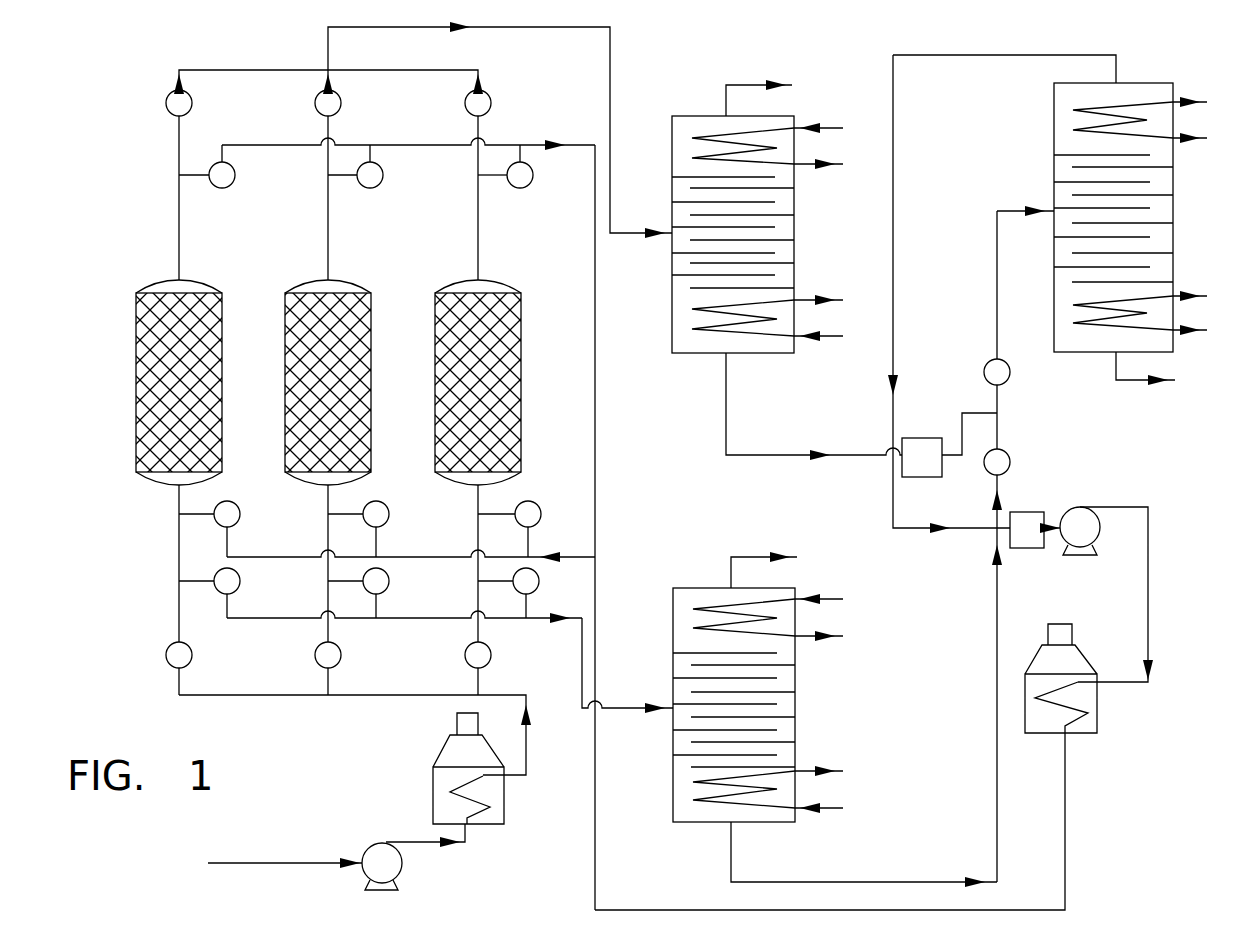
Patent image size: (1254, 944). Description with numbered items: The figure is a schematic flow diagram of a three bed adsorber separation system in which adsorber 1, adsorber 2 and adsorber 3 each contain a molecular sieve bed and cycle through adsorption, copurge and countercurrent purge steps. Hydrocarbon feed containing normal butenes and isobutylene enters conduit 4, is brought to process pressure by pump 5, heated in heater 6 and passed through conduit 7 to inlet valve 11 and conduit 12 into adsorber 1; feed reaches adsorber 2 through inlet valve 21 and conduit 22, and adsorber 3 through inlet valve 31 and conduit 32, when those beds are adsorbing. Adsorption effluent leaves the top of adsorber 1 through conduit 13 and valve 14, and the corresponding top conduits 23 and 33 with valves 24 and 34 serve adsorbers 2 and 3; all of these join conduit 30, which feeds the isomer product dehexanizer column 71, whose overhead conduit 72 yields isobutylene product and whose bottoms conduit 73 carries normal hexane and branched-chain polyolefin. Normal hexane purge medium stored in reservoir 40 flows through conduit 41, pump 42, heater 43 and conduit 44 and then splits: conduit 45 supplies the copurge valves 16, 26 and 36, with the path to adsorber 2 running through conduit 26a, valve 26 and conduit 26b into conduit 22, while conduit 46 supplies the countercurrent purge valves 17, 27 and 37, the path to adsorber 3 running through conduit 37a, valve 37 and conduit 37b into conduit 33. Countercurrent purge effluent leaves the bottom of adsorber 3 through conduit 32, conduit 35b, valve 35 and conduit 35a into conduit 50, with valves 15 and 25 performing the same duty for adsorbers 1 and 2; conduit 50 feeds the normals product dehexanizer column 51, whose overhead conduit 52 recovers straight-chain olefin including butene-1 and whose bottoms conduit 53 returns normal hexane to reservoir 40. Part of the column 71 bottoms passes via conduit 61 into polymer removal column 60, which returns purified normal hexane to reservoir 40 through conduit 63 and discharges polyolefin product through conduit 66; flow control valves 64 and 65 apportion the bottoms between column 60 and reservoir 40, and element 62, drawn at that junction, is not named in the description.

The adsorber 1 is at (136, 347).
The adsorber 2 is at (285, 347).
The adsorber 3 is at (435, 347).
The conduit 4 is at (268, 849).
The pump 5 is at (400, 883).
The heater 6 is at (506, 808).
The conduit 7 is at (528, 744).
The inlet valve 11 is at (167, 656).
The conduit 12 is at (177, 505).
The conduit 13 is at (177, 210).
The valve 14 is at (192, 104).
The valve 15 is at (240, 585).
The valve 16 is at (227, 501).
The valve 17 is at (232, 185).
The inlet valve 21 is at (350, 662).
The conduit 22 is at (326, 505).
The conduit 23 is at (332, 218).
The valve 24 is at (341, 104).
The valve 25 is at (390, 581).
The valve 26 is at (390, 514).
The conduit 26a is at (380, 543).
The conduit 26b is at (362, 512).
The valve 27 is at (383, 176).
The conduit 30 is at (527, 36).
The inlet valve 31 is at (488, 664).
The conduit 32 is at (475, 490).
The conduit 33 is at (482, 218).
The valve 34 is at (491, 104).
The valve 35 is at (531, 593).
The conduit 35a is at (529, 620).
The conduit 35b is at (493, 583).
The valve 36 is at (535, 501).
The valve 37 is at (529, 185).
The conduit 37a is at (522, 152).
The conduit 37b is at (493, 178).
The purge medium reservoir 40 is at (1030, 510).
The conduit 41 is at (1055, 522).
The pump 42 is at (1083, 507).
The heater 43 is at (1098, 702).
The conduit 44 is at (1066, 836).
The conduit 45 is at (575, 558).
The conduit 46 is at (596, 532).
The conduit 50 is at (580, 642).
The fractional distillation column 51 is at (797, 705).
The conduit 52 is at (747, 557).
The conduit 53 is at (783, 882).
The polymer removal fractional distillation column 60 is at (1175, 190).
The conduit 61 is at (995, 283).
The separator 62 is at (980, 483).
The conduit 63 is at (894, 165).
The flow control valve 64 is at (1006, 362).
The flow control valve 65 is at (1006, 453).
The conduit 66 is at (1128, 382).
The fractional distillation column 71 is at (796, 211).
The conduit 72 is at (744, 85).
The conduit 73 is at (728, 400).